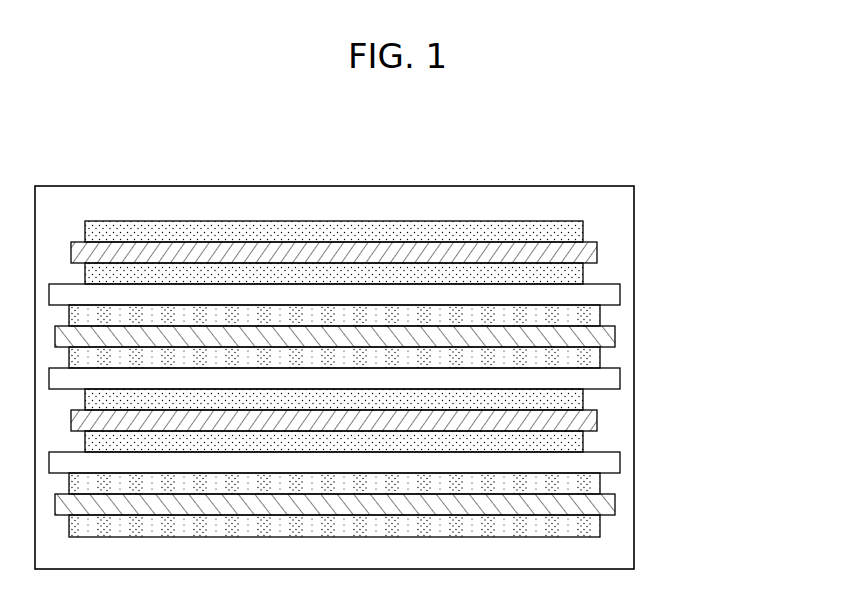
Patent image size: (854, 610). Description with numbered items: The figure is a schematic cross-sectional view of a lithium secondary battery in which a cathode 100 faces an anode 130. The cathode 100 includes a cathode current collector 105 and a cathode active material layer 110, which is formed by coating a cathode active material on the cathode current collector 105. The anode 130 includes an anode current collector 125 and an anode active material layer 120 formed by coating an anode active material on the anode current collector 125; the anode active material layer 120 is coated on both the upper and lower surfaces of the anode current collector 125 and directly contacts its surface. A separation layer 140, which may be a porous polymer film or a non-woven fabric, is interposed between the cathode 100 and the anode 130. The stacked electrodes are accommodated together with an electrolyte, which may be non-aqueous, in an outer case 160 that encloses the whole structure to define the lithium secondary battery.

The cathode 100 is at (416, 256).
The cathode current collector 105 is at (597, 253).
The cathode active material layer 110 is at (583, 231).
The anode active material layer 120 is at (600, 316).
The anode current collector 125 is at (615, 338).
The anode 130 is at (408, 338).
The separation layer 140 is at (511, 292).
The outer case 160 is at (634, 504).